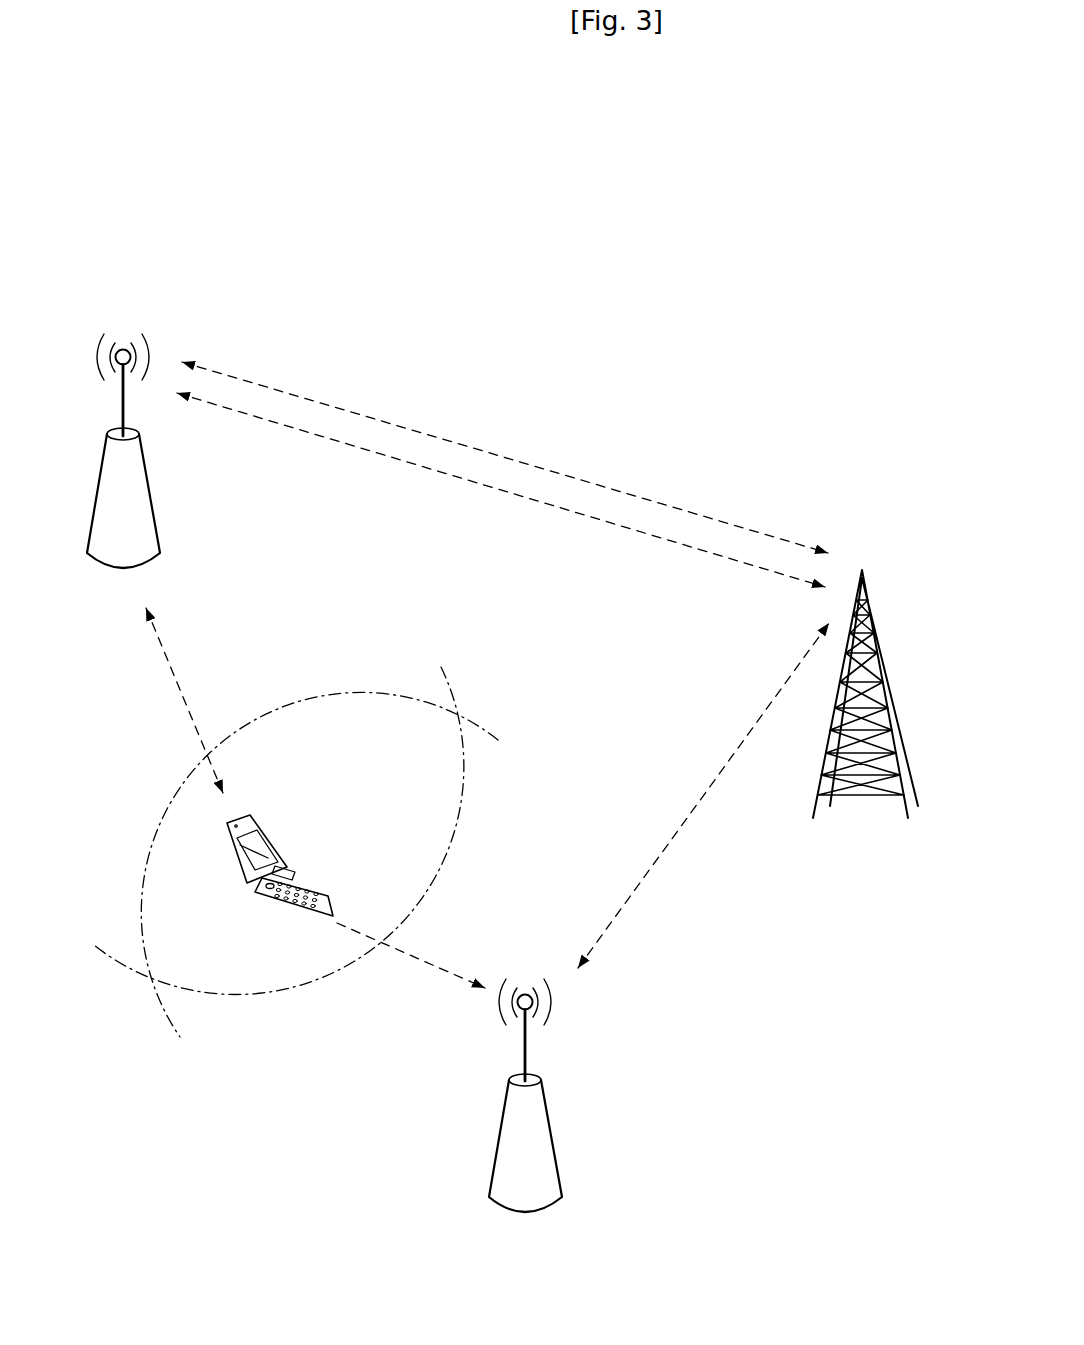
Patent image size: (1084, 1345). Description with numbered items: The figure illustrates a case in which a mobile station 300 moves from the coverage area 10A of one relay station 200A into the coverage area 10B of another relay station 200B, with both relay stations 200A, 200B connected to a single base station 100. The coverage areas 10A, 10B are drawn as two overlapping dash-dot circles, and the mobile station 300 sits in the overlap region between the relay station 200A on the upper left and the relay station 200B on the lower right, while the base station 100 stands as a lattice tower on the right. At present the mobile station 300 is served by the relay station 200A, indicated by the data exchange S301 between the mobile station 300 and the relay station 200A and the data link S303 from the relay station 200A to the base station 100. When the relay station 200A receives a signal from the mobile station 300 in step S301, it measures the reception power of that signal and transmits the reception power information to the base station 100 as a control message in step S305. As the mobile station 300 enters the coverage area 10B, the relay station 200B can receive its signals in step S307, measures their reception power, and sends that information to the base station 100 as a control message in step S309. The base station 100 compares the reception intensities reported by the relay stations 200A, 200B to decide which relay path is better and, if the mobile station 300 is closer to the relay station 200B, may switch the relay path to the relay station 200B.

The relay station 200A is at (118, 340).
The relay station 200B is at (525, 990).
The base station 100 is at (862, 568).
The mobile station 300 is at (270, 823).
The coverage area 10A is at (103, 950).
The coverage area 10B is at (158, 1008).
The signal reception from mobile station by relay station 200A S301 is at (172, 652).
The service provision from relay station 200A S303 is at (470, 478).
The reception power information transmission from relay station 200A S305 is at (488, 453).
The signal reception from mobile station by relay station 200B S307 is at (450, 972).
The reception power information transmission from relay station 200B S309 is at (665, 852).